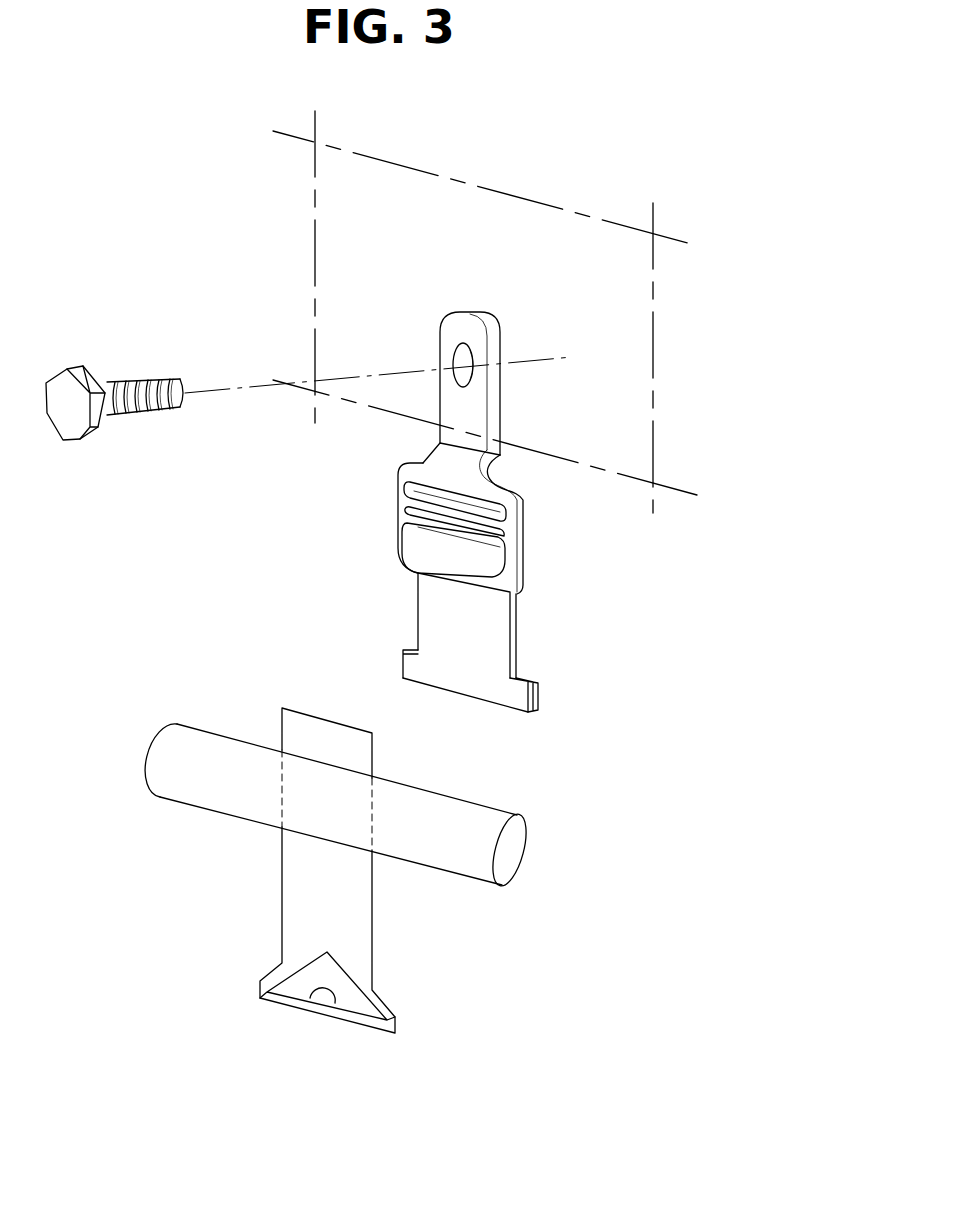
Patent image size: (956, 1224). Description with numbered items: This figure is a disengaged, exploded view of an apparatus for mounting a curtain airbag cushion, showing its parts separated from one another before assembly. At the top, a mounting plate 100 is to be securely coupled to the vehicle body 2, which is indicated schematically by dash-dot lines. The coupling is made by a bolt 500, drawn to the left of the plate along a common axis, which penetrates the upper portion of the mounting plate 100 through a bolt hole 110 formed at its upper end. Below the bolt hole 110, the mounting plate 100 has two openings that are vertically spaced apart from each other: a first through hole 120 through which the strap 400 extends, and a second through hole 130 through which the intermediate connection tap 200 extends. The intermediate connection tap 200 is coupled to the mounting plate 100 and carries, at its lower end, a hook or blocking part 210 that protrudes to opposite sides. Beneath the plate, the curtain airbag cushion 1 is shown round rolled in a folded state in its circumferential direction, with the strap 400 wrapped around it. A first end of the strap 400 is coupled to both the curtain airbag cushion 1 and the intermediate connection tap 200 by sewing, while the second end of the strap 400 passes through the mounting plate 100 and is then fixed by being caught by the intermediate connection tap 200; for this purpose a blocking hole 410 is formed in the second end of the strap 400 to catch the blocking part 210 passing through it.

The curtain airbag cushion 1 is at (160, 760).
The vehicle body 2 is at (493, 216).
The mounting plate 100 is at (523, 550).
The bolt hole 110 is at (462, 362).
The first through hole 120 is at (410, 487).
The second through hole 130 is at (412, 514).
The intermediate connection tap 200 is at (436, 607).
The blocking part 210 is at (412, 667).
The strap 400 is at (296, 903).
The blocking hole 410 is at (310, 996).
The bolt 500 is at (146, 420).